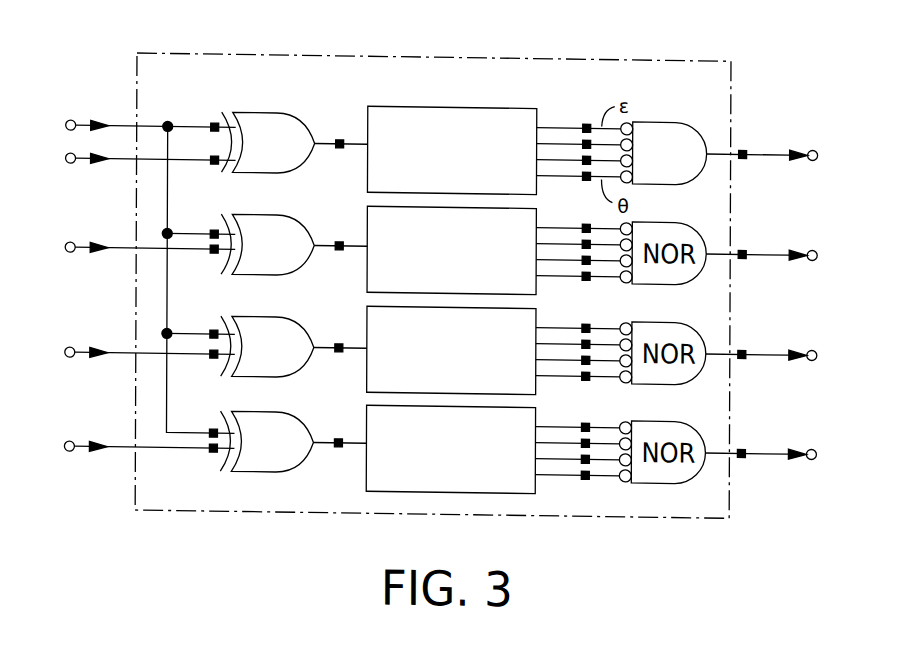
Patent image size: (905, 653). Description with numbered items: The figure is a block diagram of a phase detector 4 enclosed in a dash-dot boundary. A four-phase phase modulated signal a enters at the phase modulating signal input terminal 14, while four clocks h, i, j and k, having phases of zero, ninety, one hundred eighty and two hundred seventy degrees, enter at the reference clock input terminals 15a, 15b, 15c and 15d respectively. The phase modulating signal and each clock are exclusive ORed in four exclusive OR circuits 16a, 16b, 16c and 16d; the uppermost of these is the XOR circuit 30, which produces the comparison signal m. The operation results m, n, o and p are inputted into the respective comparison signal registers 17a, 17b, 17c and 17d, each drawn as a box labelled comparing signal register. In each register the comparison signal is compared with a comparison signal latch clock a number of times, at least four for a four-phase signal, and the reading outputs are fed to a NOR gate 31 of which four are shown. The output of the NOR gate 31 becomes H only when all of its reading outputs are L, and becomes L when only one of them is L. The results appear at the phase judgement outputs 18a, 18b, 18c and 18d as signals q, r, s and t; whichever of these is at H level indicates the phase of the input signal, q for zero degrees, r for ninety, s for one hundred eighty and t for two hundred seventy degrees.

The phase detector 4 is at (606, 53).
The phase modulating signal input terminal 14 is at (74, 121).
The reference clock input terminal 15a is at (73, 164).
The reference clock input terminal 15b is at (73, 253).
The reference clock input terminal 15c is at (73, 358).
The reference clock input terminal 15d is at (73, 452).
The exclusive OR circuit 16a is at (295, 129).
The exclusive OR circuit 16b is at (326, 240).
The exclusive OR circuit 16c is at (326, 342).
The exclusive OR circuit 16d is at (326, 437).
The comparison signal register 17a is at (507, 103).
The comparison signal register 17b is at (507, 203).
The comparison signal register 17c is at (507, 303).
The comparison signal register 17d is at (507, 402).
The phase judgement output 18a is at (812, 140).
The phase judgement output 18b is at (812, 240).
The phase judgement output 18c is at (812, 340).
The phase judgement output 18d is at (812, 439).
The XOR circuit 30 is at (252, 111).
The NOR gate 31 is at (665, 115).